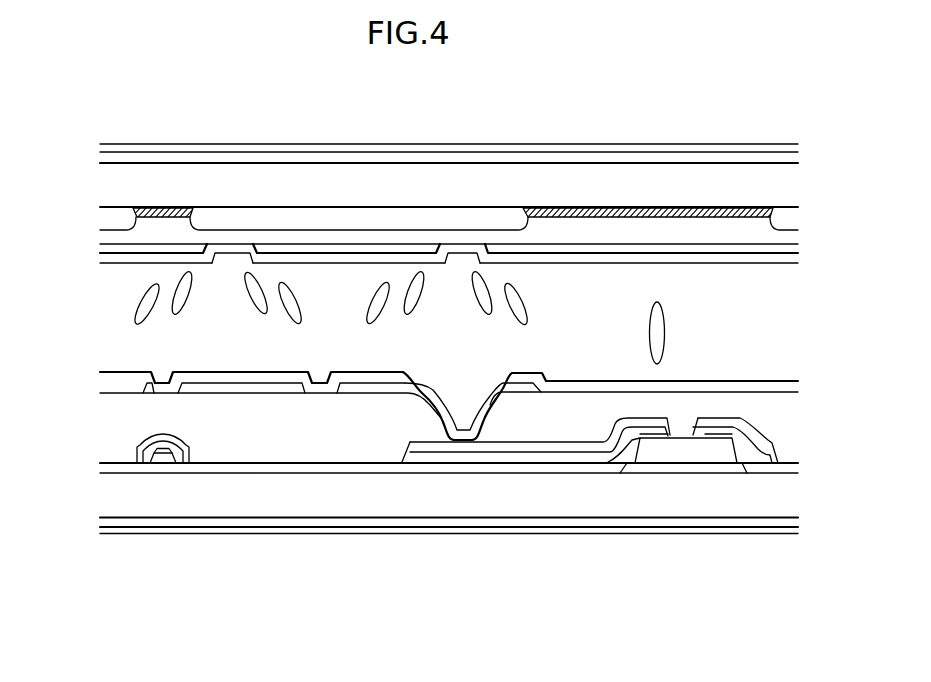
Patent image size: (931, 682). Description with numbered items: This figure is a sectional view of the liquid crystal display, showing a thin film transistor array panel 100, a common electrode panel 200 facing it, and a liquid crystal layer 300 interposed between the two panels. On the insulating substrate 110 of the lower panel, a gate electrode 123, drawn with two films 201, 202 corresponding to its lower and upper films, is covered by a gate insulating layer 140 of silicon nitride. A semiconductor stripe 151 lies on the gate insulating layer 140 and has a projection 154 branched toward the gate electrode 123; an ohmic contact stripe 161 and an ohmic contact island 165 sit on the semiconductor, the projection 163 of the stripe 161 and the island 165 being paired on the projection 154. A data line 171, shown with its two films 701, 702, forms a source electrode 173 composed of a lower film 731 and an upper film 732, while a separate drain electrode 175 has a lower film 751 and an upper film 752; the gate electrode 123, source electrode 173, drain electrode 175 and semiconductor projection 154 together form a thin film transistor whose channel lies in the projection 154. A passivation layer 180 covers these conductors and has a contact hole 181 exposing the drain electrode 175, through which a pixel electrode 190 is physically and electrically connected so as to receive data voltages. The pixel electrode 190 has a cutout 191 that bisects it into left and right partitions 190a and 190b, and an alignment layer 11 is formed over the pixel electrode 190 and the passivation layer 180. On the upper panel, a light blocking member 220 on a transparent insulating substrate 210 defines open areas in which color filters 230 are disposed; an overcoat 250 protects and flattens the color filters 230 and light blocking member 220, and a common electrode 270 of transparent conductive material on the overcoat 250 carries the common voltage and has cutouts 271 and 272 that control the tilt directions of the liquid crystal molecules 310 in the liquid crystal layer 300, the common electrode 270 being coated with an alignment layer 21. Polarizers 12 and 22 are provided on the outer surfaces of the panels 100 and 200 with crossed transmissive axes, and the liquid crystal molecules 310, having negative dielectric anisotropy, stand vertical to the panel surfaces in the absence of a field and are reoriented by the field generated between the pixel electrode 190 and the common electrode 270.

The TFT array panel 100 is at (791, 439).
The common electrode panel 200 is at (786, 190).
The LC layer 300 is at (110, 328).
The liquid crystal molecules 310 is at (148, 291).
The alignment layer 11 is at (105, 378).
The alignment layer 21 is at (105, 262).
The polarizer 12 is at (748, 532).
The polarizer 22 is at (723, 146).
The insulating substrate 110 is at (273, 516).
The insulating substrate 210 is at (280, 165).
The light blocking member 220 is at (174, 208).
The color filters 230 is at (360, 213).
The overcoat 250 is at (708, 228).
The common electrode 270 is at (558, 247).
The cutout 271 is at (458, 269).
The cutout 272 is at (224, 271).
The gate electrode 123 is at (683, 536).
The lower layer of gate electrode 201 is at (663, 468).
The upper layer of gate electrode 202 is at (704, 463).
The gate insulating layer 140 is at (305, 468).
The projection 154 is at (662, 443).
The projection 163 is at (717, 437).
The ohmic contact island 165 is at (635, 440).
The source electrode 173 is at (735, 387).
The lower film 731 is at (707, 430).
The upper film 732 is at (745, 418).
The drain electrode 175 is at (536, 386).
The lower film 751 is at (572, 455).
The upper film 752 is at (615, 422).
The passivation layer 180 is at (230, 458).
The contact hole 181 is at (459, 394).
The cutout 191 is at (342, 478).
The pixel electrode 190 is at (295, 510).
The partition 190a is at (290, 387).
The partition 190b is at (368, 385).
The data line 171 is at (154, 546).
The lower layer of gate line 701 is at (146, 462).
The upper layer of gate line 702 is at (183, 462).
The semiconductor stripe 151 is at (157, 462).
The ohmic contact stripe 161 is at (169, 462).